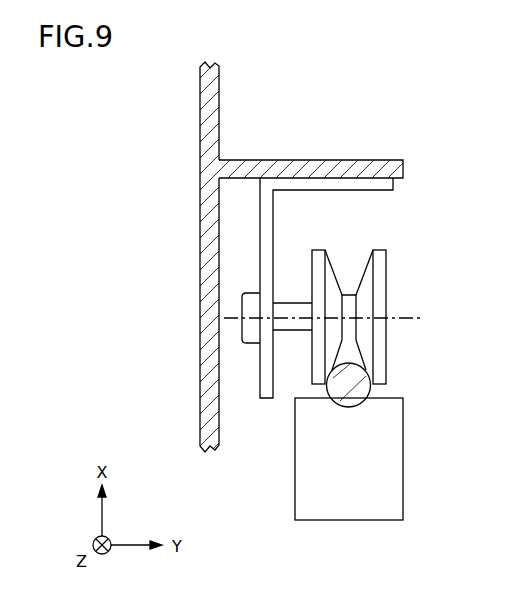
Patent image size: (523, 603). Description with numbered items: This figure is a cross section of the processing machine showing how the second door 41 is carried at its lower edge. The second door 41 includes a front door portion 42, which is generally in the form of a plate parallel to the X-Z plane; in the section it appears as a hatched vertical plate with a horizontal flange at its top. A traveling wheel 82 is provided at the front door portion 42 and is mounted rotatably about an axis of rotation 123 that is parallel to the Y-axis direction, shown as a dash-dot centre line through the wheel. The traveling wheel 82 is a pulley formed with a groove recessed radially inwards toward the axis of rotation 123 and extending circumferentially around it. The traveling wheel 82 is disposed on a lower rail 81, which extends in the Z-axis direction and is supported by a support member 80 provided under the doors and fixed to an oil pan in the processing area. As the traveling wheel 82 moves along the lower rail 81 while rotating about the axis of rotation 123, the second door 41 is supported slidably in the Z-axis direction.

The second door 41 is at (261, 301).
The front door portion 42 is at (212, 258).
The support member 80 is at (404, 478).
The lower rail 81 is at (356, 386).
The traveling wheel 82 is at (386, 268).
The axis of rotation 123 is at (351, 304).